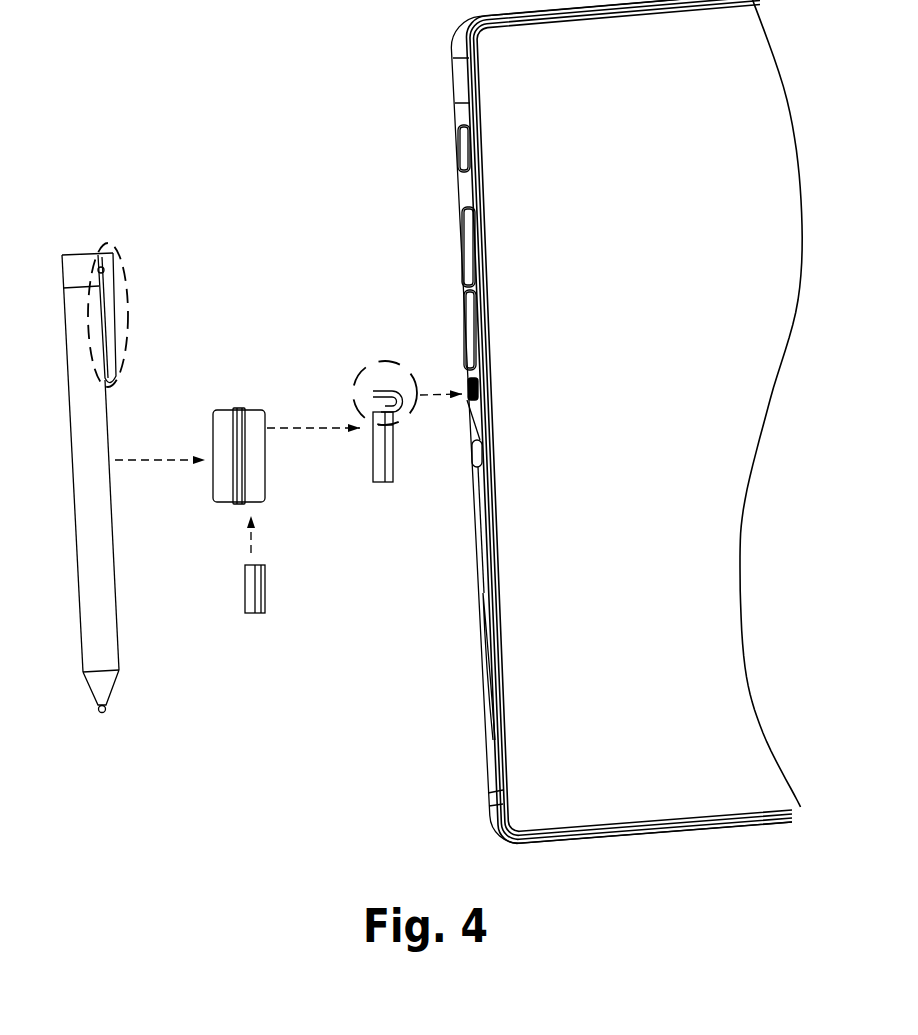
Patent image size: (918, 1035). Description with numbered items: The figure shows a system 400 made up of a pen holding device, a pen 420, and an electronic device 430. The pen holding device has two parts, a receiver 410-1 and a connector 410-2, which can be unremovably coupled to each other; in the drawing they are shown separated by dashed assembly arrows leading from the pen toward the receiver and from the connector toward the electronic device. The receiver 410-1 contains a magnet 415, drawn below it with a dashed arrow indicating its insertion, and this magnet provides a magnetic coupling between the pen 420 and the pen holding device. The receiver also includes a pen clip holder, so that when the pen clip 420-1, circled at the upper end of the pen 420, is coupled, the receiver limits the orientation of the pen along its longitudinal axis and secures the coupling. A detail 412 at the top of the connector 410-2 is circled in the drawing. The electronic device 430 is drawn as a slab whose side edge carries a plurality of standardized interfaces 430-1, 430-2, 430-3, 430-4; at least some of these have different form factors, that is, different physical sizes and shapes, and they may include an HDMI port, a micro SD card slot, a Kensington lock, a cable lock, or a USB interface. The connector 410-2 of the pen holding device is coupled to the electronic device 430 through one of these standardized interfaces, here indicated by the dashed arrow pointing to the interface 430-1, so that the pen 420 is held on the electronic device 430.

The system 400 is at (112, 176).
The pen 420 is at (120, 693).
The pen clip 420-1 is at (132, 285).
The receiver 410-1 is at (270, 457).
The magnet 415 is at (274, 556).
The connector 410-2 is at (403, 458).
The hook portion 412 is at (379, 356).
The electronic device 430 is at (476, 701).
The standardized interface 430-1 is at (489, 397).
The standardized interface 430-2 is at (489, 340).
The standardized interface 430-3 is at (485, 248).
The standardized interface 430-4 is at (481, 152).